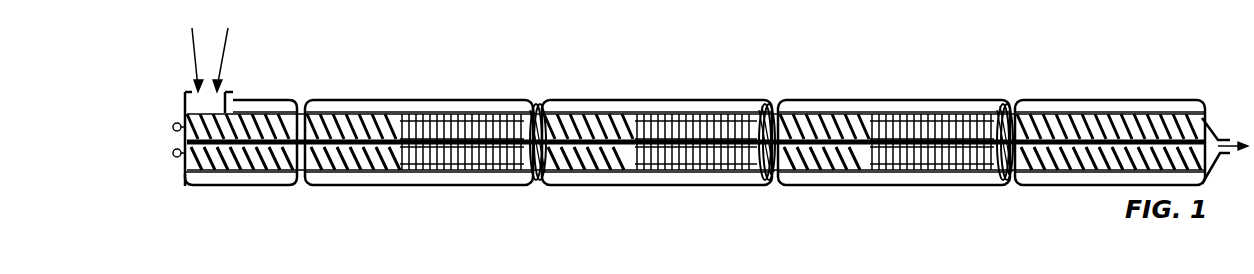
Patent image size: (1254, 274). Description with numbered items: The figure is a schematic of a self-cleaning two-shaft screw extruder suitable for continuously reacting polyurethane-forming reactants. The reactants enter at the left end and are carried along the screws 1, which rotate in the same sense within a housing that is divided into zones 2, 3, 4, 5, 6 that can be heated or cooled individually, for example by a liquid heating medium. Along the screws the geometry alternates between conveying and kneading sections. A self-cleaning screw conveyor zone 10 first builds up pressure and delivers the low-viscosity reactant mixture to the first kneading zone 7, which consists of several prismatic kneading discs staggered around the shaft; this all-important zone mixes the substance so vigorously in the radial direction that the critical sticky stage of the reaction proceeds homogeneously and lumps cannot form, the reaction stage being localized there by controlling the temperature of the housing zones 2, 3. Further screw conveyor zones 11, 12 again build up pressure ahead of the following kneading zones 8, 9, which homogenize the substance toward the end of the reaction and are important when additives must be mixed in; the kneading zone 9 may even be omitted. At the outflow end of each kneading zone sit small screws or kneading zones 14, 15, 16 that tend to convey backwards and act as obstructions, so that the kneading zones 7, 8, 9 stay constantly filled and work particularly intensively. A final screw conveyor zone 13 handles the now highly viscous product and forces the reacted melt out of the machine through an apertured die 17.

The screws 1 is at (185, 174).
The housing zone 2 is at (244, 140).
The housing zone 3 is at (426, 140).
The housing zone 4 is at (664, 140).
The housing zone 5 is at (901, 140).
The housing zone 6 is at (1110, 140).
The first kneading zone 7 is at (458, 130).
The kneading zone 8 is at (702, 130).
The kneading zone 9 is at (930, 130).
The screw conveyor zone 10 is at (273, 122).
The screw conveyor zone 11 is at (580, 130).
The screw conveyor zone 12 is at (822, 130).
The screw conveyor zone 13 is at (1103, 130).
The small screw or kneading zone 14 is at (527, 118).
The small screw or kneading zone 15 is at (765, 118).
The small screw or kneading zone 16 is at (1003, 118).
The apertured die 17 is at (1213, 130).